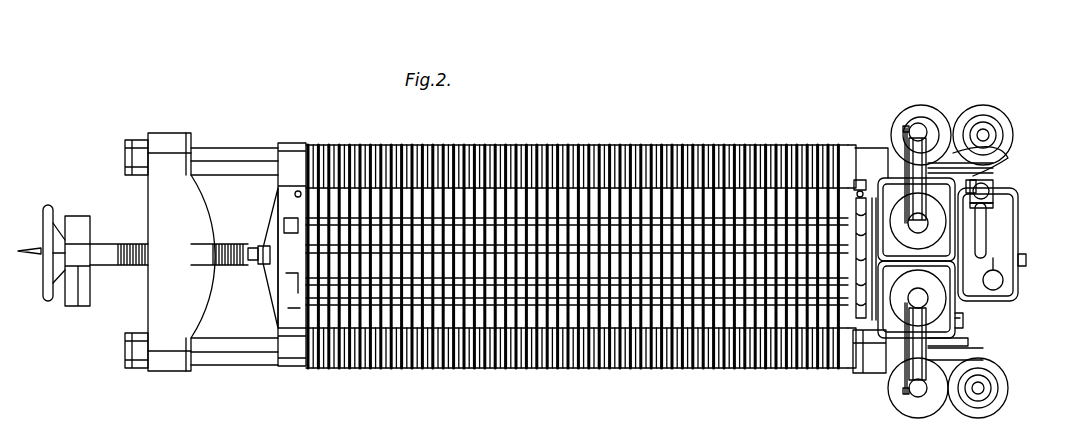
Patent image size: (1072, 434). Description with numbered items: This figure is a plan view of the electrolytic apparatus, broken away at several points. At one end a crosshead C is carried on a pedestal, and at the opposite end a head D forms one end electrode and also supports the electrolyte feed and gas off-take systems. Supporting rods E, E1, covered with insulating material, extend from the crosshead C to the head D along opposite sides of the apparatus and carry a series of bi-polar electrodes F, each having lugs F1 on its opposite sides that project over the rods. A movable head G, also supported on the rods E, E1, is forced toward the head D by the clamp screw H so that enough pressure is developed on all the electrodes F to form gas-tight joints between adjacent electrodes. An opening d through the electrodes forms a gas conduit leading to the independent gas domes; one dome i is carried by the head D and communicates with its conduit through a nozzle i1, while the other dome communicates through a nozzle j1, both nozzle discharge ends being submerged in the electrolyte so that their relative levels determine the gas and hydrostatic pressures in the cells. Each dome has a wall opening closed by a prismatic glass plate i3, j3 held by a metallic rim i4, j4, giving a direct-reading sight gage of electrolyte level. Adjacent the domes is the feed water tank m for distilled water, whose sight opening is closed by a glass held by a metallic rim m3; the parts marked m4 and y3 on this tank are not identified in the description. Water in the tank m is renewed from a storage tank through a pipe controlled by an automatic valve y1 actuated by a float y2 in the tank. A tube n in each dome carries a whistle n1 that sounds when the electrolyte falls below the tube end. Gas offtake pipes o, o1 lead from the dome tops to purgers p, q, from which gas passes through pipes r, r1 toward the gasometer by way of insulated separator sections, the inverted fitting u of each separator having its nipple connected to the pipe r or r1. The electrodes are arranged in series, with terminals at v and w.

The crosshead C is at (170, 252).
The head D is at (860, 366).
The supporting rod E is at (226, 350).
The supporting rod E1 is at (232, 156).
The bi-polar electrodes F is at (447, 138).
The lugs F1 is at (590, 378).
The movable head G is at (276, 203).
The clamp screw H is at (128, 235).
The opening d is at (720, 140).
The gas dome i is at (950, 318).
The nozzle i1 is at (872, 277).
The prismatic glass plate i3 is at (971, 312).
The metallic rim i4 is at (945, 333).
The nozzle j1 is at (882, 186).
The prismatic glass plate j3 is at (988, 140).
The metallic rim j4 is at (966, 175).
The feed water tank m is at (1005, 228).
The metallic rim m3 is at (994, 275).
The valve stem m4 is at (1018, 252).
The tube n is at (917, 263).
The whistle n1 is at (897, 120).
The gas offtake pipe o is at (965, 350).
The gas offtake pipe o1 is at (960, 155).
The purger p is at (937, 410).
The purger q is at (942, 105).
The pipe r is at (975, 388).
The pipe r1 is at (970, 122).
The inverted fitting u is at (985, 382).
The terminal v is at (862, 256).
The terminal w is at (290, 182).
The automatic valve y1 is at (985, 178).
The float y2 is at (987, 197).
The valve rod y3 is at (990, 280).